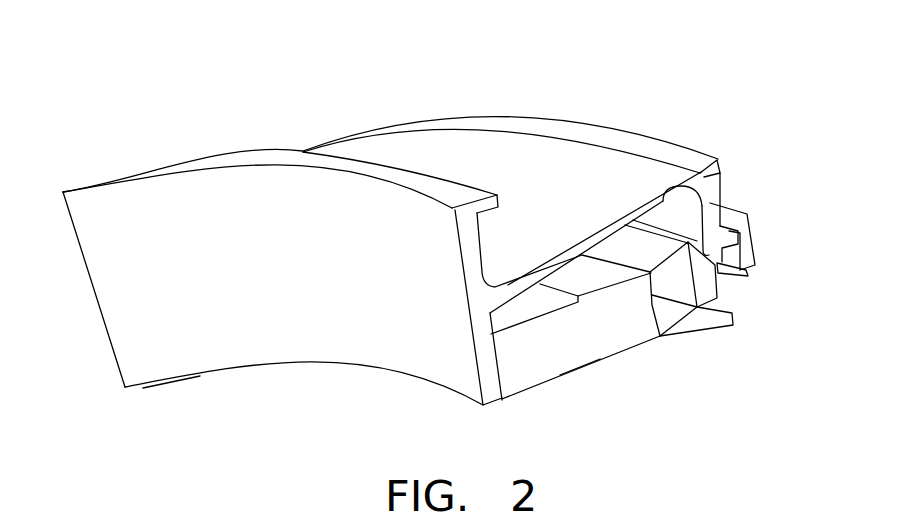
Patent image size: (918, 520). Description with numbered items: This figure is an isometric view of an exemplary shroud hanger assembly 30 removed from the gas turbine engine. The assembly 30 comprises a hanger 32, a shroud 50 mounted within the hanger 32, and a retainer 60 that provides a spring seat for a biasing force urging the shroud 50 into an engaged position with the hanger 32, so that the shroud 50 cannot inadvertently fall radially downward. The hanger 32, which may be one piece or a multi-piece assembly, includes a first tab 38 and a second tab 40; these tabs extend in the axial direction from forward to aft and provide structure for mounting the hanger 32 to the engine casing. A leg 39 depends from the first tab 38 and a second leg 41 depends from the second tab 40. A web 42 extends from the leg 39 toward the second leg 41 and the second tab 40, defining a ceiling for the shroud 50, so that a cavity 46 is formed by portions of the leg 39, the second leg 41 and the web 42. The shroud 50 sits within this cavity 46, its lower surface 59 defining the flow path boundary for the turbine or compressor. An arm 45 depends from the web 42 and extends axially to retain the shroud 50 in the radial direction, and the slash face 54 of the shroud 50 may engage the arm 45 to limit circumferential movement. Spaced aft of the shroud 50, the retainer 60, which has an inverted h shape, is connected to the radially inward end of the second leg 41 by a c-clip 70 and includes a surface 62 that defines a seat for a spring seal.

The shroud hanger assembly 30 is at (667, 73).
The hanger 32 is at (521, 108).
The first tab 38 is at (229, 152).
The leg 39 is at (218, 317).
The second tab 40 is at (721, 162).
The second leg 41 is at (706, 201).
The web 42 is at (372, 147).
The arm 45 is at (541, 281).
The cavity 46 is at (678, 214).
The shroud 50 is at (527, 396).
The slash face 54 is at (590, 357).
The lower surface 59 is at (598, 384).
The retainer 60 is at (742, 271).
The surface 62 is at (680, 288).
The c-clip 70 is at (762, 220).